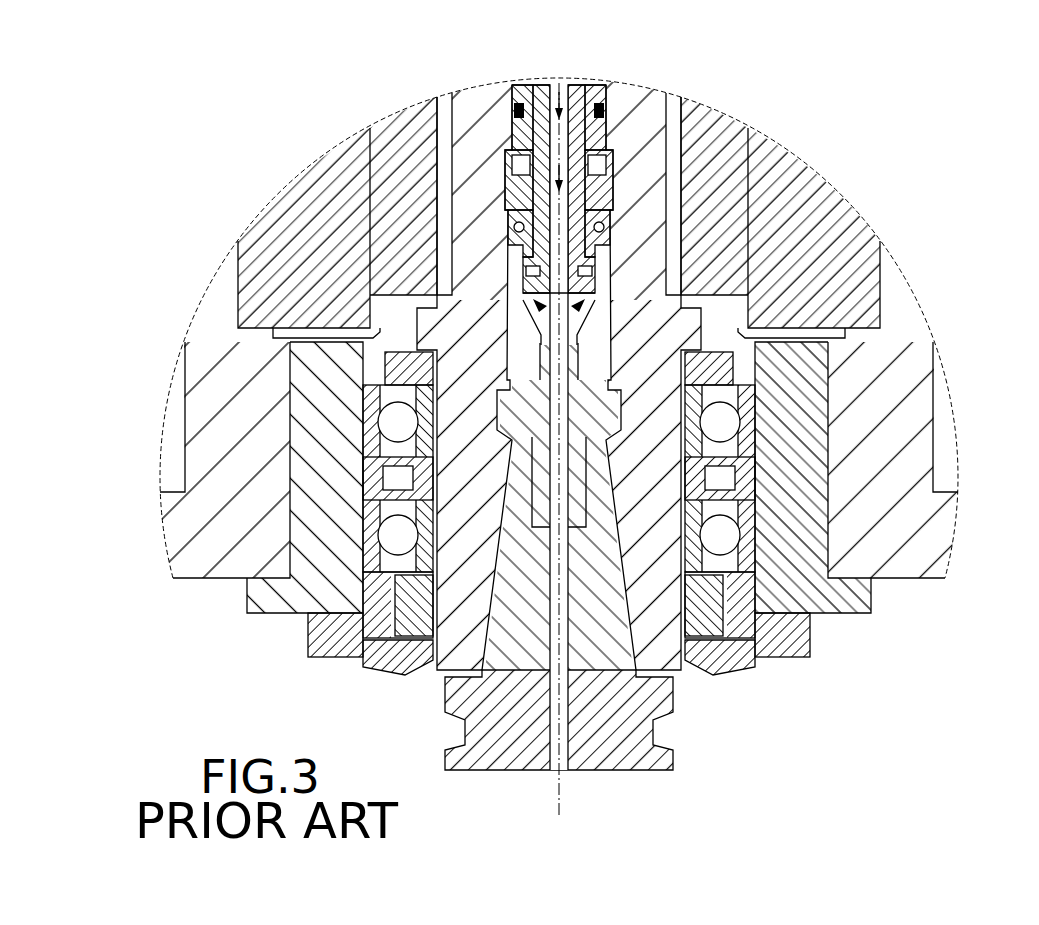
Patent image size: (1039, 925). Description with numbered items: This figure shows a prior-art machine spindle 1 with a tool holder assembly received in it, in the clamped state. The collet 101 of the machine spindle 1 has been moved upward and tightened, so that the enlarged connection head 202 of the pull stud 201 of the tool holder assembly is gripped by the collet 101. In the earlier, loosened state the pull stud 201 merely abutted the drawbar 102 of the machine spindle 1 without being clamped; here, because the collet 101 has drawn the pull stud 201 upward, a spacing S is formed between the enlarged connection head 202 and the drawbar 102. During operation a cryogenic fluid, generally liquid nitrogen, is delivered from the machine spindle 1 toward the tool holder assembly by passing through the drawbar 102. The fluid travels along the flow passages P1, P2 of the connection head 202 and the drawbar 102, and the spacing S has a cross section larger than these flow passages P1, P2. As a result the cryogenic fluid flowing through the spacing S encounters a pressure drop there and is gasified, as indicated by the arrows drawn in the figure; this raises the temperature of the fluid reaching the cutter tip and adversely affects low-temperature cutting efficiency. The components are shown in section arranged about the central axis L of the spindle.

The machine spindle 1 is at (652, 183).
The collet 101 is at (590, 345).
The drawbar 102 is at (615, 155).
The pull stud 201 is at (588, 427).
The enlarged connection head 202 is at (600, 308).
The flow passage P1 is at (553, 337).
The flow passage P2 is at (559, 80).
The spacing S is at (535, 312).
The spindle axis L is at (559, 464).